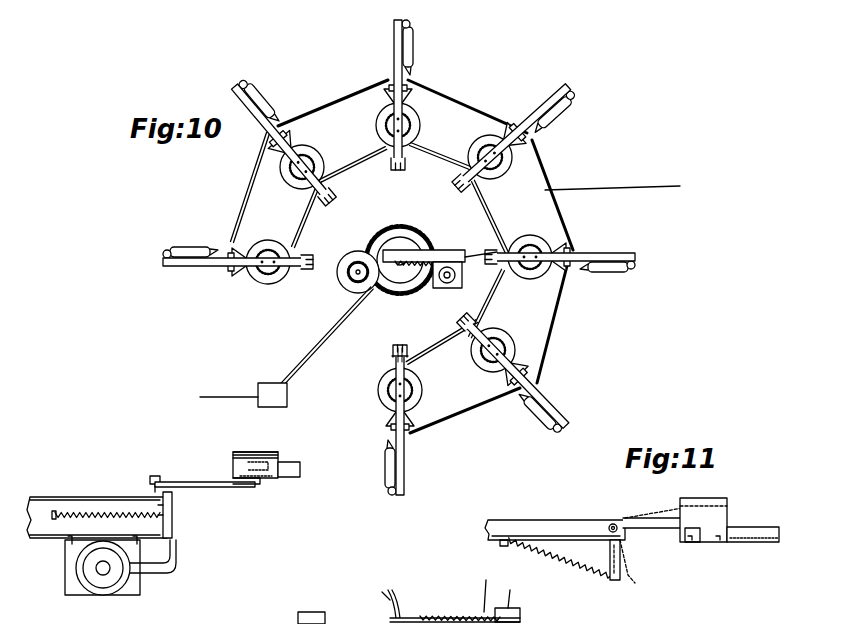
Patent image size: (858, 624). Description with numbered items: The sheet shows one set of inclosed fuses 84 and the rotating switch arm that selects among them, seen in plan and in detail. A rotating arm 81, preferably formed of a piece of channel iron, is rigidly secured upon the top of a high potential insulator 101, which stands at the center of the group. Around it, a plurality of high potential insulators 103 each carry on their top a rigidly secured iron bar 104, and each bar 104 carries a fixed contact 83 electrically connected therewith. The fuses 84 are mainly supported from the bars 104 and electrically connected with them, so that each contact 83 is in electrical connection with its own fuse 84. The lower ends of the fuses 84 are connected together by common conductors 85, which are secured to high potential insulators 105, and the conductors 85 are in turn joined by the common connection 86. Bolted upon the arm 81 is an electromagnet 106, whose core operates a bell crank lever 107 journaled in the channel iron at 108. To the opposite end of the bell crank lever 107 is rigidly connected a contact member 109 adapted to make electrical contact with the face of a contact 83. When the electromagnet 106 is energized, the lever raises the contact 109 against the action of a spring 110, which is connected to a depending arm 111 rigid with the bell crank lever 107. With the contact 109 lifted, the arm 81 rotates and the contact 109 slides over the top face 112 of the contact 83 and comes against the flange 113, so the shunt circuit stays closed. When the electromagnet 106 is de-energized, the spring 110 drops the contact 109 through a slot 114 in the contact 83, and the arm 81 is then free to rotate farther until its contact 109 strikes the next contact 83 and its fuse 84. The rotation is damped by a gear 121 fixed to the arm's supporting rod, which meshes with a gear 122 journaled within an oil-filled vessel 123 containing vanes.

In FIG. 10, the rotating arm 81 is at (438, 250).
In FIG. 12, the rotating arm 81 is at (98, 497).
In FIG. 11, the rotating arm 81 is at (548, 525).
In FIG. 10, the fixed contact 83 is at (336, 188).
In FIG. 12, the fixed contact 83 is at (262, 484).
In FIG. 11, the fixed contact 83 is at (704, 536).
In FIG. 10, the inclosed fuse 84 is at (260, 100).
In FIG. 10, the common conductor 85 is at (470, 110).
In FIG. 10, the common connection 86 is at (638, 186).
In FIG. 10, the high potential insulator 101 is at (404, 240).
In FIG. 10, the high potential insulator 103 is at (318, 150).
In FIG. 10, the iron bar 104 is at (608, 252).
In FIG. 12, the iron bar 104 is at (298, 468).
In FIG. 11, the iron bar 104 is at (752, 530).
In FIG. 10, the high potential insulator 105 is at (540, 145).
In FIG. 10, the electromagnet 106 is at (445, 283).
In FIG. 12, the electromagnet 106 is at (105, 585).
In FIG. 10, the bell crank lever 107 is at (462, 280).
In FIG. 12, the bell crank lever 107 is at (172, 566).
In FIG. 12, the journal 108 is at (175, 505).
In FIG. 11, the journal 108 is at (613, 523).
In FIG. 12, the contact member 109 is at (195, 482).
In FIG. 11, the contact member 109 is at (670, 528).
In FIG. 12, the spring 110 is at (130, 510).
In FIG. 11, the spring 110 is at (562, 562).
In FIG. 11, the depending arm 111 is at (622, 575).
In FIG. 10, the top face 112 is at (393, 360).
In FIG. 12, the top face 112 is at (268, 466).
In FIG. 10, the flange 113 is at (430, 350).
In FIG. 12, the flange 113 is at (256, 455).
In FIG. 11, the flange 113 is at (715, 505).
In FIG. 10, the slot 114 is at (403, 352).
In FIG. 12, the slot 114 is at (240, 460).
In FIG. 10, the gear 121 is at (394, 228).
In FIG. 10, the gear 122 is at (350, 292).
In FIG. 10, the vessel 123 is at (348, 280).